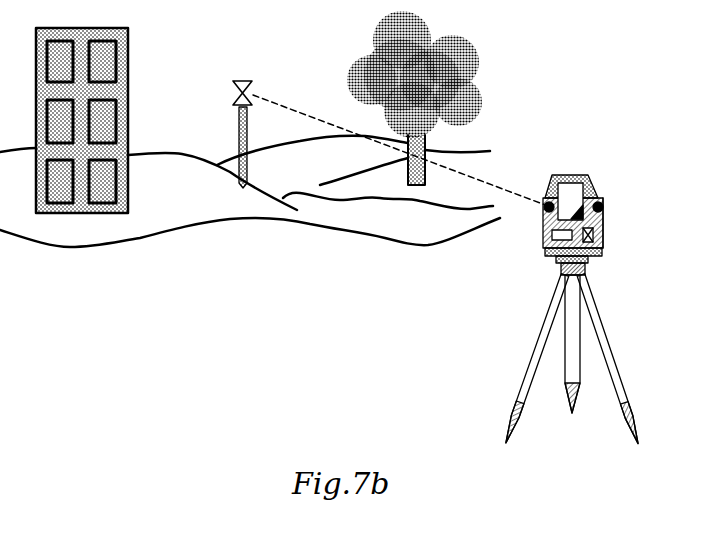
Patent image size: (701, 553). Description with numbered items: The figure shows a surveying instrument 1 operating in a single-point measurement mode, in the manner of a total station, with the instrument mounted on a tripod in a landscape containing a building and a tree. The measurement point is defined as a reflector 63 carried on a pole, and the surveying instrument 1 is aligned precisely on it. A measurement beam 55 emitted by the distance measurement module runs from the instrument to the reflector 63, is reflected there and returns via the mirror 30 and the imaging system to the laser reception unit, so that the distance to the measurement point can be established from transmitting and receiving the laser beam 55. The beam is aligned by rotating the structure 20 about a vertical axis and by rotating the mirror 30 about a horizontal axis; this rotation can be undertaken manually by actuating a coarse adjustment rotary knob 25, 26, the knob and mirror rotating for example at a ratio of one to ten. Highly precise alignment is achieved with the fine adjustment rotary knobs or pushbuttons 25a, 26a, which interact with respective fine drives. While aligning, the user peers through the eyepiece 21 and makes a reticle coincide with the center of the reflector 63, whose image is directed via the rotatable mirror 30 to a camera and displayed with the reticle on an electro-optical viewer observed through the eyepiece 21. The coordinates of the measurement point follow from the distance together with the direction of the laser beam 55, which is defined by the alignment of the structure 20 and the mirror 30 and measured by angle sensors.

The surveying instrument 1 is at (566, 281).
The structure 20 is at (602, 252).
The eyepiece 21 is at (543, 231).
The coarse adjustment rotary knob 25 is at (545, 258).
The fine adjustment rotary knob or pushbutton 25a is at (545, 217).
The coarse adjustment rotary knob 26 is at (608, 220).
The fine adjustment rotary knob or pushbutton 26a is at (603, 212).
The mirror 30 is at (588, 187).
The measurement beam 55 is at (485, 180).
The reflector 63 is at (243, 80).